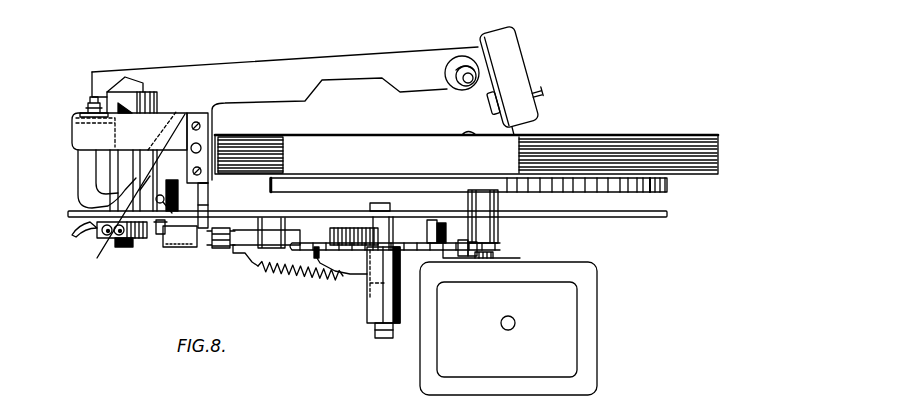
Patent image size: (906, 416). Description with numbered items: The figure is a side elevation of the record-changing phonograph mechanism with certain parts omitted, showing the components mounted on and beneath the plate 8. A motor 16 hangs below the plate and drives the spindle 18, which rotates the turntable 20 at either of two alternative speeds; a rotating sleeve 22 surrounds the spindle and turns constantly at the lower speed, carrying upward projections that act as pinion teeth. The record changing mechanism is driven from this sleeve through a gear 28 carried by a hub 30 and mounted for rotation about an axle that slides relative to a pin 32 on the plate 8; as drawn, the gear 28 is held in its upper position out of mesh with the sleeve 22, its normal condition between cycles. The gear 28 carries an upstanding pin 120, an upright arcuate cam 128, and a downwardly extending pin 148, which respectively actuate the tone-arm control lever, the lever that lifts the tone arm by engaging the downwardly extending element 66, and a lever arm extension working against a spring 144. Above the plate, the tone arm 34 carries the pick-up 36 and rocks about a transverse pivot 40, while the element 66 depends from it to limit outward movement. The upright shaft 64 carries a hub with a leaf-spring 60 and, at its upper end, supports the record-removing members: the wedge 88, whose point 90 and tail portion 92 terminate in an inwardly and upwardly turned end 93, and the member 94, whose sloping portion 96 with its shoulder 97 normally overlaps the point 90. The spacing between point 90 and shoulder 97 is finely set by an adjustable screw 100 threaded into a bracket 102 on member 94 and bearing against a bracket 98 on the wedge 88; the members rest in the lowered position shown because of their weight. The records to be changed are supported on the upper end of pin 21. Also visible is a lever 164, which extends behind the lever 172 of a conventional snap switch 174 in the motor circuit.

The plate 8 is at (647, 215).
The motor 16 is at (586, 330).
The spindle 18 is at (478, 249).
The turntable 20 is at (668, 186).
The pin 21 is at (468, 134).
The rotating sleeve 22 is at (494, 258).
The gear 28 is at (410, 250).
The hub 30 is at (368, 305).
The pin 32 is at (380, 336).
The tone arm 34 is at (334, 61).
The pick-up 36 is at (522, 73).
The pivot 40 is at (200, 148).
The leaf-spring 60 is at (109, 232).
The upright shaft 64 is at (122, 243).
The downwardly extending element 66 is at (203, 205).
The wedge 88 is at (88, 198).
The point 90 is at (148, 191).
The tail portion 92 is at (132, 195).
The inwardly and upwardly turned end 93 is at (80, 225).
The member 94 is at (148, 119).
The sloping portion 96 is at (157, 178).
The shoulder 97 is at (205, 182).
The bracket 98 is at (72, 143).
The adjustable screw 100 is at (92, 100).
The bracket 102 is at (85, 112).
The pin 120 is at (430, 228).
The cam 128 is at (337, 228).
The spring 144 is at (288, 275).
The pin 148 is at (318, 272).
The lever 164 is at (163, 233).
The switch lever 172 is at (166, 198).
The snap switch 174 is at (183, 240).